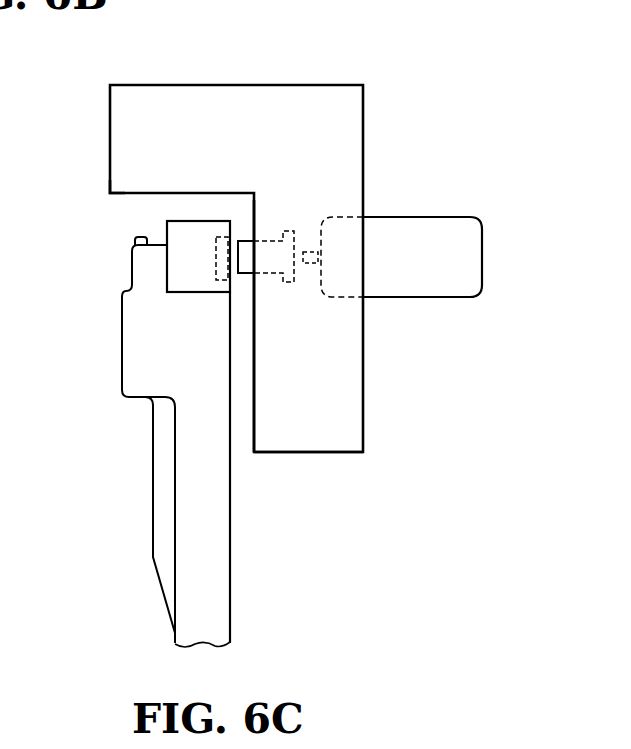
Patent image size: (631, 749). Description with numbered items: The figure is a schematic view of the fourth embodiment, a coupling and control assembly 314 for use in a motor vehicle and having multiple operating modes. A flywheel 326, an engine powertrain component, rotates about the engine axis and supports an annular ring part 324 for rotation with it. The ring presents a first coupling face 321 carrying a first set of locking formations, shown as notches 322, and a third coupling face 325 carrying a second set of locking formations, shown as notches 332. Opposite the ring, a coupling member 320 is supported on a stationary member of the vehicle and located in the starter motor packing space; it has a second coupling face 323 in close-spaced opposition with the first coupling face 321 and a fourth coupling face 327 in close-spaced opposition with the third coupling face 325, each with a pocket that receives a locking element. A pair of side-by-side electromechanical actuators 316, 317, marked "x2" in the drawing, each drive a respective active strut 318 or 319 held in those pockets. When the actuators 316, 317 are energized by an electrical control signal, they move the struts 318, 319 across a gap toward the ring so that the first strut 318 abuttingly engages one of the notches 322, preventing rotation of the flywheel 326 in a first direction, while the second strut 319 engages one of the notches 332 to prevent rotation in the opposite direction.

The coupling and control assembly 314 is at (349, 60).
The electromechanical actuator 316 is at (387, 217).
The electromechanical actuator 317 is at (401, 257).
The first strut 318 is at (273, 272).
The second strut 319 is at (286, 256).
The coupling member 320 is at (307, 453).
The first coupling face 321 is at (230, 528).
The locking formations 322 is at (222, 235).
The second set of locking formations 332 is at (235, 258).
The second coupling face 323 is at (253, 380).
The annular ring part 324 is at (166, 227).
The third coupling face 325 is at (140, 237).
The flywheel 326 is at (232, 601).
The fourth coupling face 327 is at (124, 197).